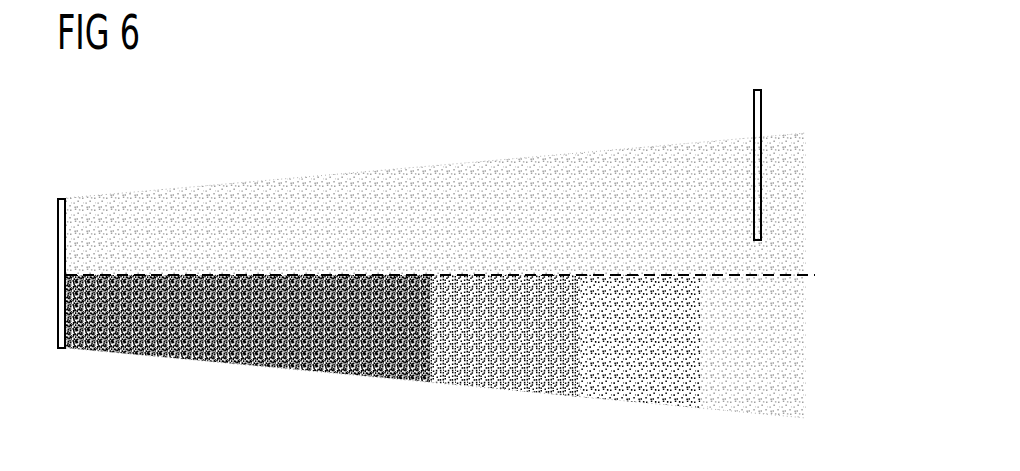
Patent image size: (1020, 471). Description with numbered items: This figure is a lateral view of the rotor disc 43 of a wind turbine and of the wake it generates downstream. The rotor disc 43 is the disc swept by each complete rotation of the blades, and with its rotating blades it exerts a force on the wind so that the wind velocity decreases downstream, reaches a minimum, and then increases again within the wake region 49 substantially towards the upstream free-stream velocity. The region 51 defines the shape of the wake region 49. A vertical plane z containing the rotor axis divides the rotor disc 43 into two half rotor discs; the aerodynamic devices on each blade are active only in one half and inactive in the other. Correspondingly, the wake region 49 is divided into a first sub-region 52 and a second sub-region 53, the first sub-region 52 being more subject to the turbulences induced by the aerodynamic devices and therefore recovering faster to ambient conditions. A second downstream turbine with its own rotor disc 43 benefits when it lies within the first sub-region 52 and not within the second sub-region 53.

The rotor disc 43 is at (62, 197).
The wake region 49 is at (525, 390).
The region defining the wake shape 51 is at (341, 172).
The first sub-region 52 is at (223, 191).
The second sub-region 53 is at (286, 366).
The vertical plane z is at (545, 273).